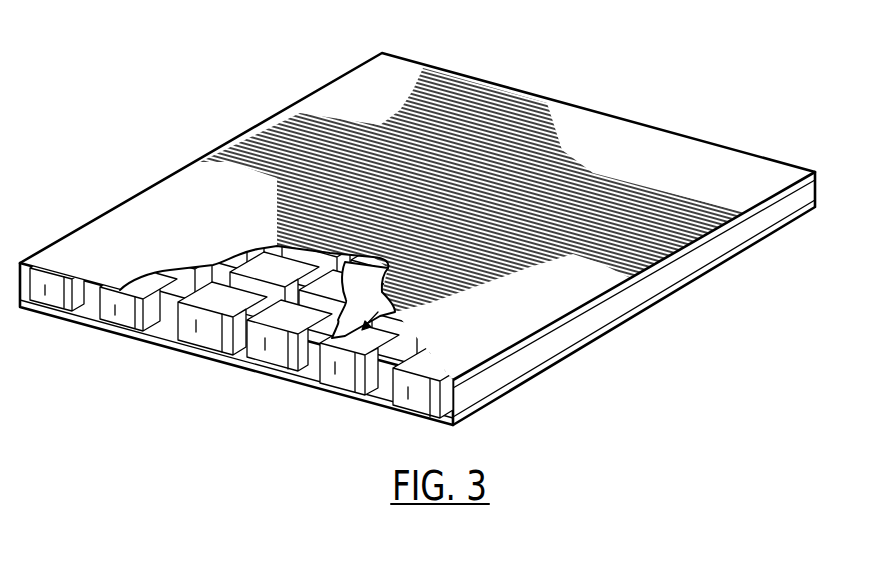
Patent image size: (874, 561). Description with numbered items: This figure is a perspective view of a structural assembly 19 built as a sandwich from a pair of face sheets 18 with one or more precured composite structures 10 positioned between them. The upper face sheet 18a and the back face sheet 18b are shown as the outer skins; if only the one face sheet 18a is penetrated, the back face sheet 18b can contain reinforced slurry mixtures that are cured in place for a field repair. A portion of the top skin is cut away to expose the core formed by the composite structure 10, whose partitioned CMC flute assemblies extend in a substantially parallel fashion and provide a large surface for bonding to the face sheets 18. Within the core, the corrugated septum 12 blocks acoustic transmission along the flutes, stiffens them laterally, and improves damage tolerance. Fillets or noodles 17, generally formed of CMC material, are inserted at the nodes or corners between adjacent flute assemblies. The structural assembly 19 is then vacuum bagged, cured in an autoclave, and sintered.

The structural assembly 19 is at (513, 56).
The face sheet 18 is at (120, 232).
The face sheet 18a is at (816, 172).
The back face sheet 18b is at (817, 208).
The fillets or noodles 17 is at (92, 287).
The corrugated septum 12 is at (230, 277).
The composite structure 10 is at (400, 309).